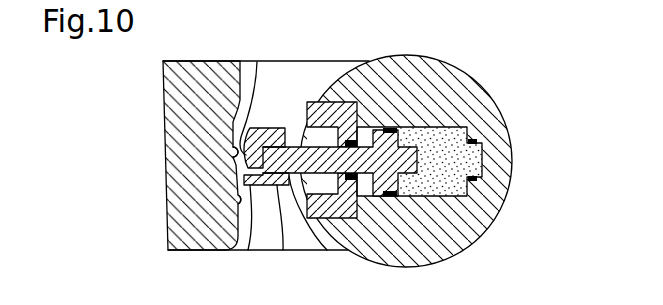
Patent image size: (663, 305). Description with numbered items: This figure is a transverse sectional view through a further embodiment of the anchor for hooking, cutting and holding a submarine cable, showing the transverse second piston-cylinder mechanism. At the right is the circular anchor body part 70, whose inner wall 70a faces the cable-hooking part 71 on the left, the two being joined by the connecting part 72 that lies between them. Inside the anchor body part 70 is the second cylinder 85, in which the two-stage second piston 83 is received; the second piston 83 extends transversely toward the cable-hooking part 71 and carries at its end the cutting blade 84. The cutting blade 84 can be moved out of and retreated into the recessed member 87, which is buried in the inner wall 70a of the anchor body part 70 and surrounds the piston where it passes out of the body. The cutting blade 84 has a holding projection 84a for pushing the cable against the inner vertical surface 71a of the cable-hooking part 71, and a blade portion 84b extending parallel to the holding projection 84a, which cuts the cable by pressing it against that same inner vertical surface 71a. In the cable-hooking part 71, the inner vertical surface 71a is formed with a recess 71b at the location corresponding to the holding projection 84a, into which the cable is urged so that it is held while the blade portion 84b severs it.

The anchor body part 70 is at (431, 80).
The inner wall of anchor body 70a is at (327, 250).
The cable-hooking part 71 is at (193, 82).
The inner vertical surface 71a is at (239, 200).
The recess 71b is at (233, 153).
The connecting part 72 is at (282, 87).
The second piston 83 is at (417, 160).
The cutting blade 84 is at (283, 250).
The holding projection 84a is at (257, 62).
The blade portion 84b is at (248, 250).
The second cylinder 85 is at (432, 126).
The recessed member 87 is at (333, 115).